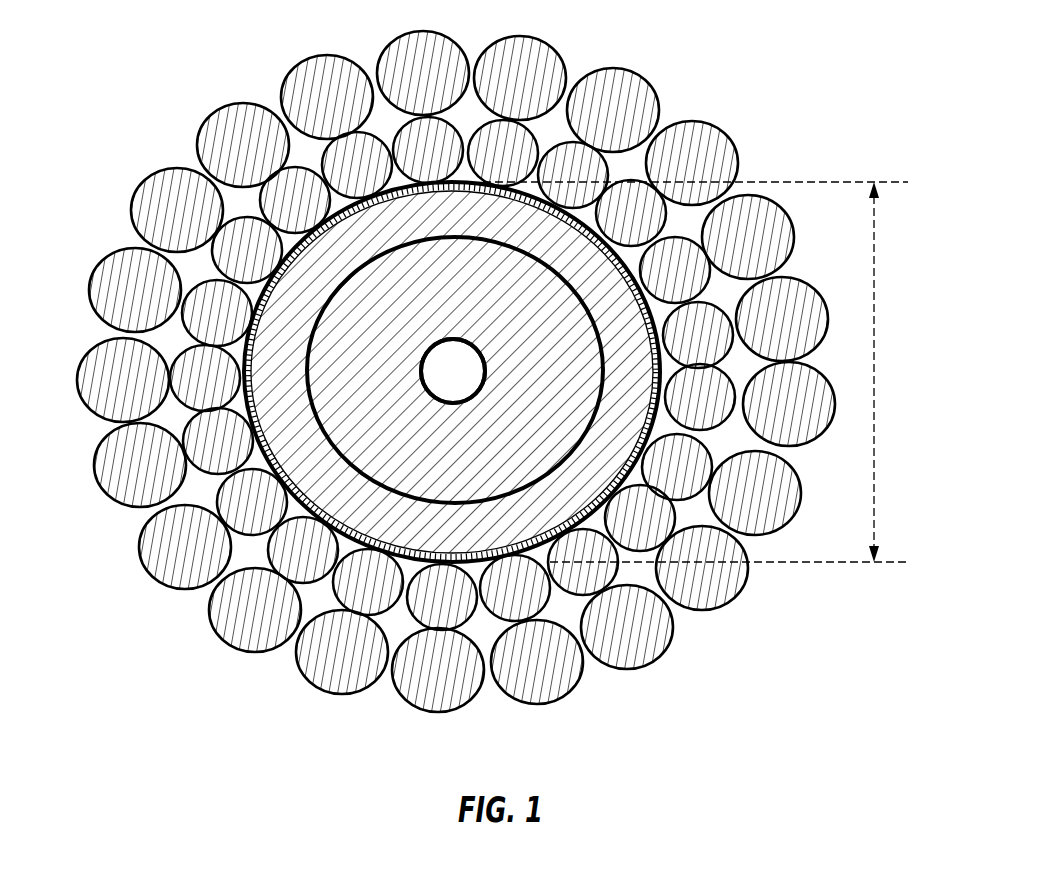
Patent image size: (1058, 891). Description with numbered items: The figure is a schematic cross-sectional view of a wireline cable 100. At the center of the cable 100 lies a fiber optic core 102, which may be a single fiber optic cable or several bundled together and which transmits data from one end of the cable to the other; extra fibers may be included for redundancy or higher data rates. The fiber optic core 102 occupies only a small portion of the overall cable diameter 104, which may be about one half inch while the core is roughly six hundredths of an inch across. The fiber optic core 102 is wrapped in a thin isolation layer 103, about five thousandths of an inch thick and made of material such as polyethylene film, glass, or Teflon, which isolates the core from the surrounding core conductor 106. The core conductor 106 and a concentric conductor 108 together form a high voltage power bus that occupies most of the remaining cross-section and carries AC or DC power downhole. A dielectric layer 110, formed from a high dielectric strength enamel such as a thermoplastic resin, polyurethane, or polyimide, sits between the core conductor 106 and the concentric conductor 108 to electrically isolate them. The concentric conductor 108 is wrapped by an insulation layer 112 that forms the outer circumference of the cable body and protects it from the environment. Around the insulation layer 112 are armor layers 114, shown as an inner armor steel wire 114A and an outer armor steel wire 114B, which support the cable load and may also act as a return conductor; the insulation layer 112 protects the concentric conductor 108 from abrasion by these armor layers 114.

The wireline cable 100 is at (141, 64).
The fiber optic core 102 is at (474, 384).
The isolation layer 103 is at (421, 371).
The diameter 104 is at (876, 370).
The core conductor 106 is at (475, 308).
The concentric conductor 108 is at (475, 227).
The dielectric layer 110 is at (333, 300).
The insulation layer 112 is at (456, 554).
The armor layers 114 is at (682, 649).
The inner armor steel wire 114A is at (545, 600).
The outer armor steel wire 114B is at (565, 673).